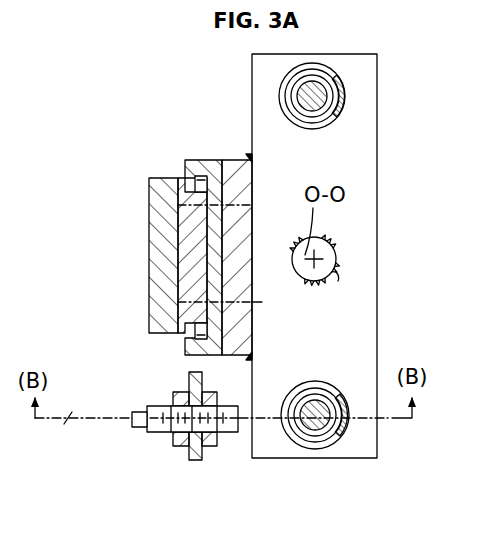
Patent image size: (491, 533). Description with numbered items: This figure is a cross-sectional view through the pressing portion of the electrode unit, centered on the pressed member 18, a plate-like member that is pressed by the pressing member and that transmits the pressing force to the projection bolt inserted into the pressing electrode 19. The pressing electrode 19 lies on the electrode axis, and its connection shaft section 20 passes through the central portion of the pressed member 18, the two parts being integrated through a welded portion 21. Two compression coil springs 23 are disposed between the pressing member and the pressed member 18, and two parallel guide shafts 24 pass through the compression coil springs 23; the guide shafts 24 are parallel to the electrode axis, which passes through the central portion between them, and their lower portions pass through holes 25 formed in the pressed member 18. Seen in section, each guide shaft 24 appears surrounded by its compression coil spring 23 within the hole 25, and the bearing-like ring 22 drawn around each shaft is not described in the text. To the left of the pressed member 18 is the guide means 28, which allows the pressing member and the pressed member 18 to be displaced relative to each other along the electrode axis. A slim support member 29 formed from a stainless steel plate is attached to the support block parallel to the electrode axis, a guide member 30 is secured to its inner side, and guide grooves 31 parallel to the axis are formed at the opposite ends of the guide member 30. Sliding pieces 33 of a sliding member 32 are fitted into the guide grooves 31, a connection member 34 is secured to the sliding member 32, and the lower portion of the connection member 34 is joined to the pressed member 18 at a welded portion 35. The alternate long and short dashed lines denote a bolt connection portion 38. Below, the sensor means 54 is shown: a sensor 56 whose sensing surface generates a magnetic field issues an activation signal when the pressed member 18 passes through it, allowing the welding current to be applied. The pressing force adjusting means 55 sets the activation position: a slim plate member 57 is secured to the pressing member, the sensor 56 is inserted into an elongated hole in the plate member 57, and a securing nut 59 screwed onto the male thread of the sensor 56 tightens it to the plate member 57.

The pressed member 18 is at (379, 189).
The pressing electrode 19 is at (337, 273).
The connection shaft section 20 is at (333, 258).
The welded portion 21 is at (341, 237).
The bearing 22 is at (357, 102).
The compression coil spring 23 is at (327, 121).
The guide shaft 24 is at (313, 108).
The hole 25 is at (315, 82).
The guide means 28 is at (186, 236).
The support member 29 is at (149, 243).
The guide member 30 is at (190, 273).
The guide groove 31 is at (178, 205).
The sliding member 32 is at (215, 160).
The sliding piece 33 is at (193, 176).
The connection member 34 is at (240, 192).
The welded portion 35 is at (250, 156).
The bolt connection portion 38 is at (258, 304).
The sensor means 54 is at (200, 440).
The pressing force adjusting means 55 is at (175, 448).
The sensor 56 is at (250, 423).
The plate member 57 is at (196, 462).
The securing nut 59 is at (178, 448).